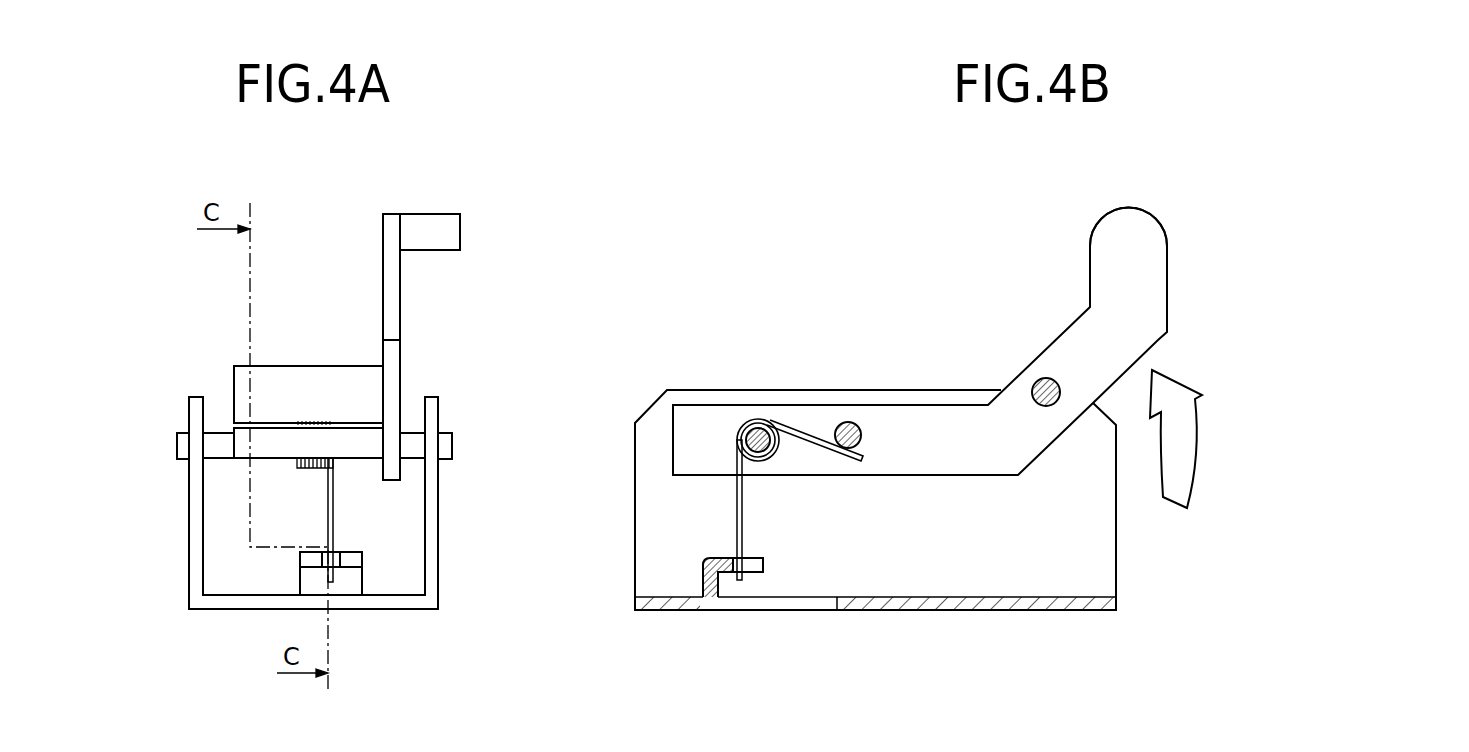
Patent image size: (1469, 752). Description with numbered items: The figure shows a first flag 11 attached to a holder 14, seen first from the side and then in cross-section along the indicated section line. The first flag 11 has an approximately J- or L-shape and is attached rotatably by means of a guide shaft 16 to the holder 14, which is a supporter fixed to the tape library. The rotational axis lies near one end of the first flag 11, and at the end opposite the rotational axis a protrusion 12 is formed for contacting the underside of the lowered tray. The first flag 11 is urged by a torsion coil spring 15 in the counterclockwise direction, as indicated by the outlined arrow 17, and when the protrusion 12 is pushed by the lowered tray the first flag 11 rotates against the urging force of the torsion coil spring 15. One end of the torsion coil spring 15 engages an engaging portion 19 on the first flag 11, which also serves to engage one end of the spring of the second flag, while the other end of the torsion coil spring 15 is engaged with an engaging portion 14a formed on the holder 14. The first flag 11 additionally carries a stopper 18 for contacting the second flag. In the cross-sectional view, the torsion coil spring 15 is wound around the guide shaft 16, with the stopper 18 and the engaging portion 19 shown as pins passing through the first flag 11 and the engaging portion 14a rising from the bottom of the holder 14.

In FIG. 4A, the first flag 11 is at (400, 298).
In FIG. 4B, the first flag 11 is at (1136, 335).
In FIG. 4A, the protrusion 12 is at (422, 214).
In FIG. 4B, the protrusion 12 is at (1113, 207).
In FIG. 4A, the holder 14 is at (403, 607).
In FIG. 4B, the holder 14 is at (1030, 612).
In FIG. 4A, the engaging portion 14a is at (323, 563).
In FIG. 4B, the engaging portion 14a is at (753, 572).
In FIG. 4A, the torsion coil spring 15 is at (333, 517).
In FIG. 4B, the torsion coil spring 15 is at (742, 518).
In FIG. 4A, the guide shaft 16 is at (173, 447).
In FIG. 4B, the guide shaft 16 is at (780, 450).
In FIG. 4B, the outlined arrow 17 is at (1197, 488).
In FIG. 4B, the stopper 18 is at (1047, 406).
In FIG. 4A, the engaging portion 19 is at (243, 452).
In FIG. 4B, the engaging portion 19 is at (861, 438).